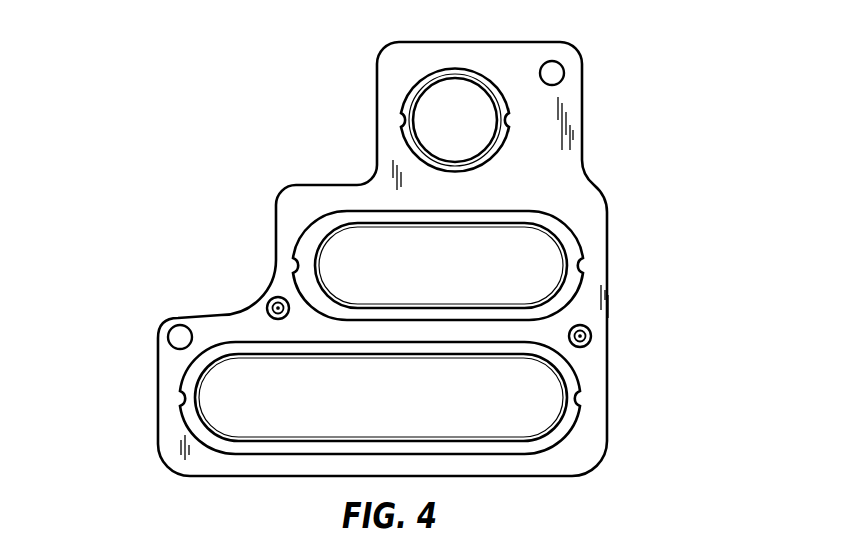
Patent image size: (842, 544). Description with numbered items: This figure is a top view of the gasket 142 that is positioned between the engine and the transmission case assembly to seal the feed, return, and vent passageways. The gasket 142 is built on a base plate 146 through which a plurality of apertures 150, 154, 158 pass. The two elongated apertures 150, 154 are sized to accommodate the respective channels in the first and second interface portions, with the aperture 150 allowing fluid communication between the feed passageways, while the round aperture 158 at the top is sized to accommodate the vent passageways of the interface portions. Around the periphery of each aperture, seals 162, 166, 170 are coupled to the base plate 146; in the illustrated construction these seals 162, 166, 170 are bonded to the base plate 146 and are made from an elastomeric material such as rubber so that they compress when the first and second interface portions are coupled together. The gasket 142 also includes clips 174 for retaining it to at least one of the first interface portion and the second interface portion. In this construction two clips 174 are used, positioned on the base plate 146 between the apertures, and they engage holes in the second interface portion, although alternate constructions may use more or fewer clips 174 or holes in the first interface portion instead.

The gasket 142 is at (212, 120).
The base plate 146 is at (303, 201).
The aperture 150 is at (515, 438).
The aperture 154 is at (513, 307).
The aperture 158 is at (462, 157).
The seal 162 is at (190, 373).
The seal 166 is at (312, 242).
The seal 170 is at (417, 87).
The clip 174 is at (274, 307).